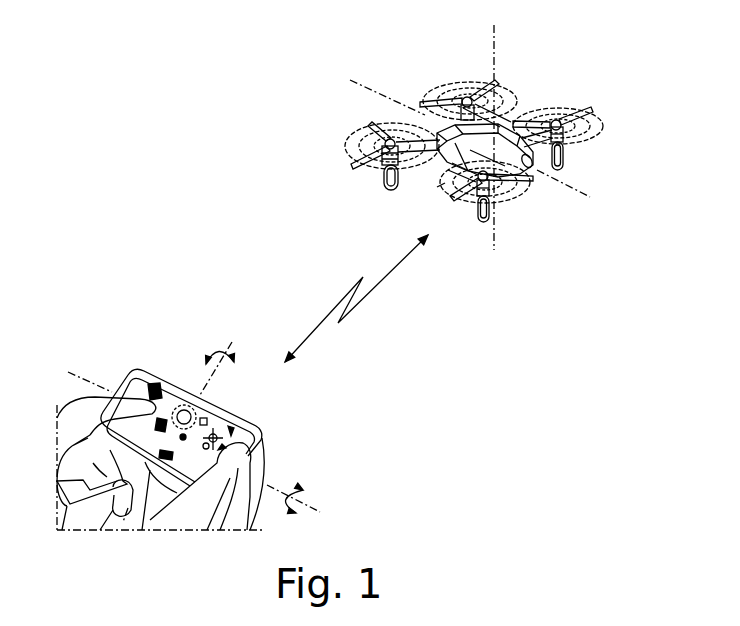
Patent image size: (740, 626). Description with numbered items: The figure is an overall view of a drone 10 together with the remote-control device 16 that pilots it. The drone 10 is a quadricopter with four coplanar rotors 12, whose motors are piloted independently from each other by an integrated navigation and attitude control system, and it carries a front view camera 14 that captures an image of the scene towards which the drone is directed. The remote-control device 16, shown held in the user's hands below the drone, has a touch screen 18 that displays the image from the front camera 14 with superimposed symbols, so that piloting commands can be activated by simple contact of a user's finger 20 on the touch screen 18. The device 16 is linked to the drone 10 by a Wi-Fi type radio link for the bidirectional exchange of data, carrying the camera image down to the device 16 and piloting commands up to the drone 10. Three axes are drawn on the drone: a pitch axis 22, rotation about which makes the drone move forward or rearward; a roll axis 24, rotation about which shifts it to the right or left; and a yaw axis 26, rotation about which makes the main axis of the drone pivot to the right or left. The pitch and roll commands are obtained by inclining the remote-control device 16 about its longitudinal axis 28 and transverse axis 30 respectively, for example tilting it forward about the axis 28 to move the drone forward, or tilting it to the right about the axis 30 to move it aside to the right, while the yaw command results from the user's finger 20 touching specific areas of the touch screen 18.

The drone 10 is at (583, 76).
The coplanar rotors 12 is at (372, 126).
The front view camera 14 is at (537, 168).
The remote-control device 16 is at (291, 422).
The touch screen 18 is at (215, 420).
The user's finger 20 is at (108, 400).
The pitch axis 22 is at (437, 187).
The roll axis 24 is at (590, 197).
The yaw axis 26 is at (495, 33).
The longitudinal axis 28 is at (318, 505).
The transverse axis 30 is at (232, 342).